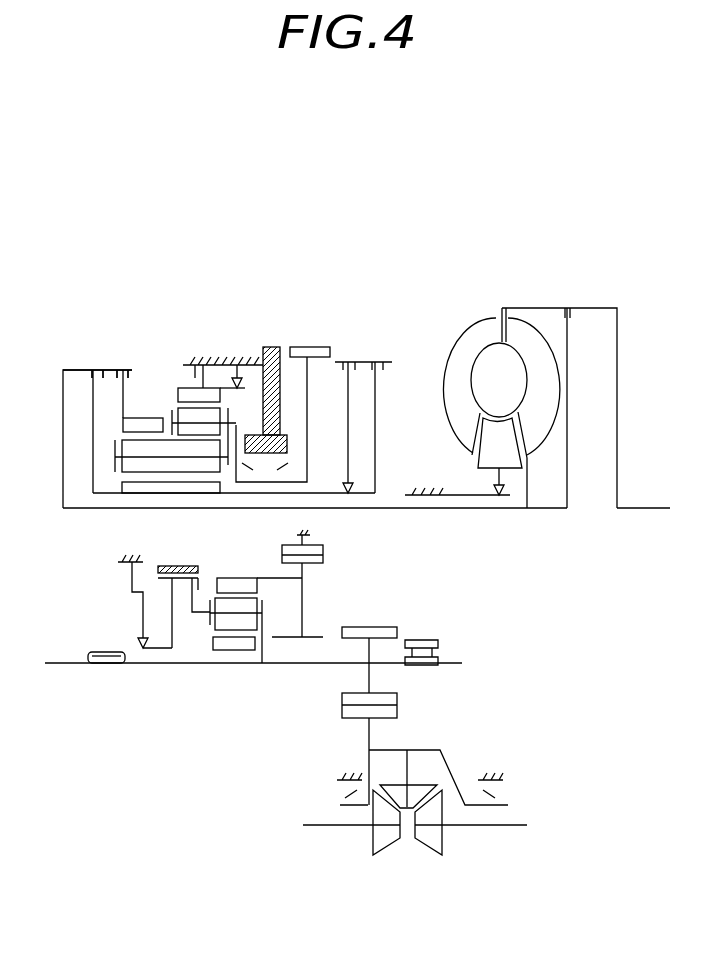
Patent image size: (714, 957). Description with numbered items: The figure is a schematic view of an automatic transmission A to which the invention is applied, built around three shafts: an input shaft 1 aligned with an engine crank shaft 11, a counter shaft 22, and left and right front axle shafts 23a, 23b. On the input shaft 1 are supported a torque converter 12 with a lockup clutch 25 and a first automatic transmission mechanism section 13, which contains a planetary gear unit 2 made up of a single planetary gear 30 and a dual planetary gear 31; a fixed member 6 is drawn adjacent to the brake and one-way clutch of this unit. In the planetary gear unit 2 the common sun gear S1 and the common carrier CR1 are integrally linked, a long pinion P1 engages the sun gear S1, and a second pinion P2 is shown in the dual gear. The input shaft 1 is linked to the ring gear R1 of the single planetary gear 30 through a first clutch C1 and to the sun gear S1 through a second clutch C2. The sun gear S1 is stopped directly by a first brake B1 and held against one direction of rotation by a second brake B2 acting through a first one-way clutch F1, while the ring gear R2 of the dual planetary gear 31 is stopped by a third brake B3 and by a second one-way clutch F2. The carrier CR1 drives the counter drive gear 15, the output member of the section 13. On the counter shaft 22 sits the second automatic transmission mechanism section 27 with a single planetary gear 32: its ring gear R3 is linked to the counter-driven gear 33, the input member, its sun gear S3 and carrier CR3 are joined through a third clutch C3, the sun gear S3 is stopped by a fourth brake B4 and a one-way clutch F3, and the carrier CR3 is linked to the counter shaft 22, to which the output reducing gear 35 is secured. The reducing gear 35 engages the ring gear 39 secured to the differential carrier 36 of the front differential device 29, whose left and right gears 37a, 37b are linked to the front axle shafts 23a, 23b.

The input shaft 1 is at (98, 508).
The planetary gear unit 2 is at (200, 308).
The transmission case 6 is at (222, 356).
The engine crank shaft 11 is at (640, 508).
The torque converter 12 is at (485, 313).
The first automatic transmission mechanism section 13 is at (70, 359).
The counter drive gear 15 is at (308, 347).
The counter shaft 22 is at (150, 665).
The front axle shaft 23a is at (340, 826).
The front axle shaft 23b is at (506, 828).
The lockup clutch 25 is at (578, 315).
The second automatic transmission mechanism section 27 is at (125, 602).
The front differential device 29 is at (416, 857).
The single planetary gear 30 is at (124, 423).
The dual planetary gear 31 is at (217, 423).
The single planetary gear 32 is at (275, 630).
The counter-driven gear 33 is at (323, 560).
The reducing gear 35 is at (375, 627).
The differential carrier 36 is at (432, 750).
The sun gear 37a is at (380, 855).
The sun gear 37b is at (432, 855).
The ring gear 39 is at (345, 708).
The automatic transmission A is at (121, 298).
The ring gear R1 is at (128, 427).
The long pinion P1 is at (130, 465).
The sun gear S1 is at (170, 488).
The carrier CR1 is at (228, 465).
The ring gear R2 is at (205, 397).
The pinion of dual planetary gear P2 is at (210, 420).
The ring gear R3 is at (250, 588).
The sun gear S3 is at (228, 650).
The carrier CR3 is at (262, 625).
The first (forward) clutch C1 is at (131, 357).
The second (reverse and direct) clutch C2 is at (97, 357).
The third (direct) clutch C3 is at (194, 616).
The first brake B1 is at (386, 413).
The second brake B2 is at (363, 412).
The third brake B3 is at (223, 359).
The fourth (under-drive) brake B4 is at (180, 593).
The first one-way clutch F1 is at (288, 419).
The second one-way clutch F2 is at (240, 357).
The one-way clutch F3 is at (142, 604).